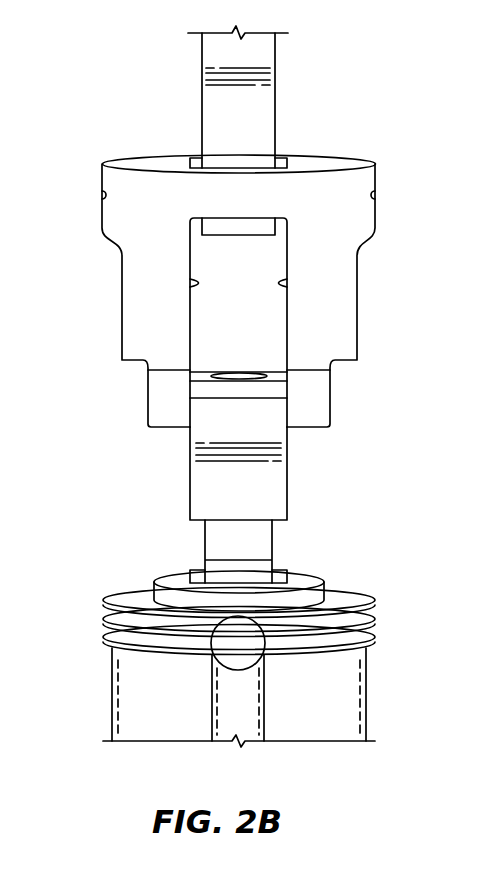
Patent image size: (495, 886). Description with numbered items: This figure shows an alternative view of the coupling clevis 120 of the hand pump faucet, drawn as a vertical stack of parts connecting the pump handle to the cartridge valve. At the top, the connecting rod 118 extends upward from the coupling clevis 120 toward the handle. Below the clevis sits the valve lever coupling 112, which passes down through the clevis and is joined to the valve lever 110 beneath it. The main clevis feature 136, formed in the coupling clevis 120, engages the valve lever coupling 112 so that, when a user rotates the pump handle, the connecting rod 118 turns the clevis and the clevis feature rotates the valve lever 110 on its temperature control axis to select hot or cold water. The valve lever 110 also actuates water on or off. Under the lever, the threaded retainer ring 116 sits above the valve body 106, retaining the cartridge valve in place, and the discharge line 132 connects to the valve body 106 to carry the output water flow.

The connecting rod 118 is at (277, 100).
The coupling clevis 120 is at (375, 215).
The main clevis feature 136 is at (190, 283).
The valve lever coupling 112 is at (287, 473).
The valve lever 110 is at (272, 545).
The retainer ring 116 is at (368, 612).
The valve body 106 is at (367, 677).
The discharge line 132 is at (237, 653).